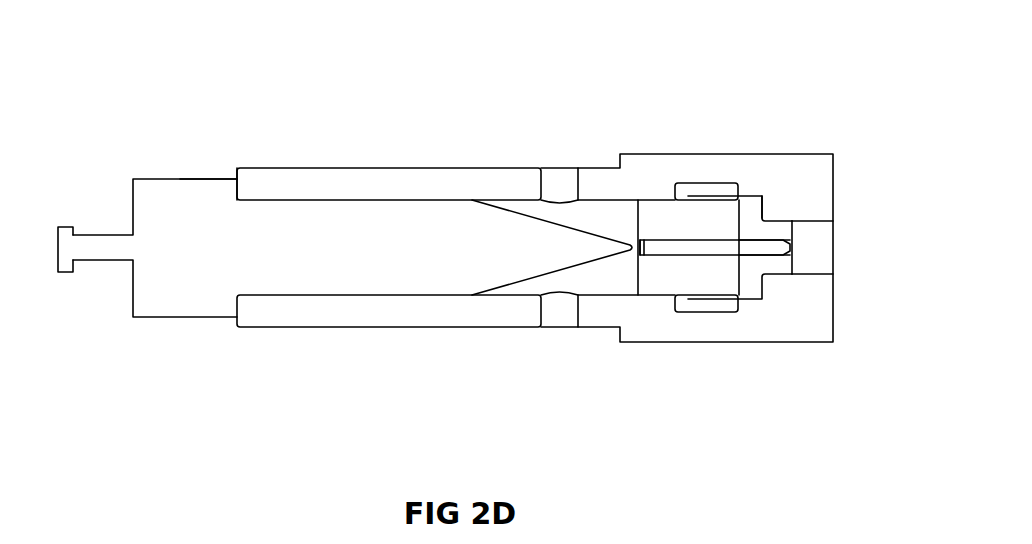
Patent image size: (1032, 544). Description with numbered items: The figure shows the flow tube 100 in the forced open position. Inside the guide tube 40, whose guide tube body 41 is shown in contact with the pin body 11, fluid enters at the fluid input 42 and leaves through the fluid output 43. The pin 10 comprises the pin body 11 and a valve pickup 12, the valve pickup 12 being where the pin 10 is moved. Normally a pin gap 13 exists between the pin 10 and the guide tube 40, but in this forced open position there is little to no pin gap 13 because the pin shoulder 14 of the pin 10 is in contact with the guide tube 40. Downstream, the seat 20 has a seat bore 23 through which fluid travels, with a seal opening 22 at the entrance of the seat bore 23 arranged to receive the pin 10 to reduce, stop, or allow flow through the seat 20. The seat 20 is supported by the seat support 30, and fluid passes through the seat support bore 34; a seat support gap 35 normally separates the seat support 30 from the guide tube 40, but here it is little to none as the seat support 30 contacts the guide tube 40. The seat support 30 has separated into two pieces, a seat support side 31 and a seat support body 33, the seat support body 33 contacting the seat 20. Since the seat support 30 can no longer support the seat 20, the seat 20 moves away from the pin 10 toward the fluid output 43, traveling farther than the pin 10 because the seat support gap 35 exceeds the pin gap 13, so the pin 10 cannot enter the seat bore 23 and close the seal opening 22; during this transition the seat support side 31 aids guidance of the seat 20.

The flow tube 100 is at (196, 377).
The pin 10 is at (312, 193).
The pin body 11 is at (453, 228).
The valve pickup 12 is at (75, 247).
The pin gap 13 is at (237, 187).
The pin shoulder 14 is at (237, 193).
The seat 20 is at (668, 298).
The seal opening 22 is at (627, 245).
The seat bore 23 is at (700, 248).
The seat support 30 is at (773, 214).
The seat support side 31 is at (713, 190).
The seat support body 33 is at (755, 203).
The seat support bore 34 is at (748, 252).
The seat support gap 35 is at (740, 202).
The guide tube 40 is at (457, 337).
The guide tube body 41 is at (372, 305).
The fluid input 42 is at (577, 310).
The fluid output 43 is at (825, 245).